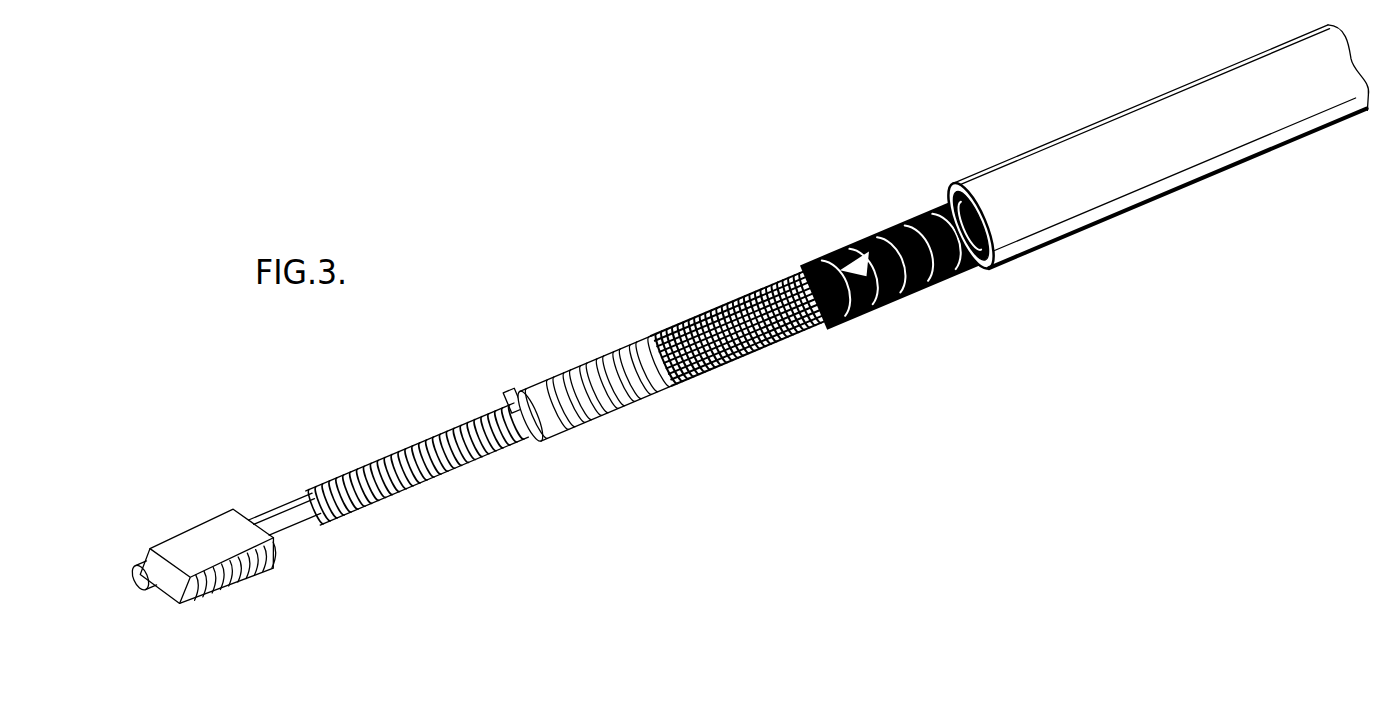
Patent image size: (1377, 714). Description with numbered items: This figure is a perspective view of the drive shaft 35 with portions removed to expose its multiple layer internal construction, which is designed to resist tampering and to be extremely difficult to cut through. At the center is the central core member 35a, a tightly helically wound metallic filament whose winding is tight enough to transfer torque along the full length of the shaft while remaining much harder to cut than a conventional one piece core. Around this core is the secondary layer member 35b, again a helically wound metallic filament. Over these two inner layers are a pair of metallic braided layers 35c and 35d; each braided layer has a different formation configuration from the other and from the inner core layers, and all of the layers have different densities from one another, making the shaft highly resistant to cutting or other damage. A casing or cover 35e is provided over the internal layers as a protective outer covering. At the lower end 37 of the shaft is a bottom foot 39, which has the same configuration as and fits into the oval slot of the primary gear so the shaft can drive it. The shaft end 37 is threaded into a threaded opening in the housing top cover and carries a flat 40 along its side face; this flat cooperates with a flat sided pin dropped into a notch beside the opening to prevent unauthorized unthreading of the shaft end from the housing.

The drive shaft 35 is at (627, 312).
The central core member 35a is at (398, 494).
The secondary layer member 35b is at (549, 441).
The metallic braided layer 35c is at (754, 354).
The metallic braided layer 35d is at (904, 294).
The casing or cover 35e is at (1114, 218).
The lower end of the shaft 37 is at (288, 503).
The bottom foot 39 is at (144, 582).
The flat 40 is at (226, 544).